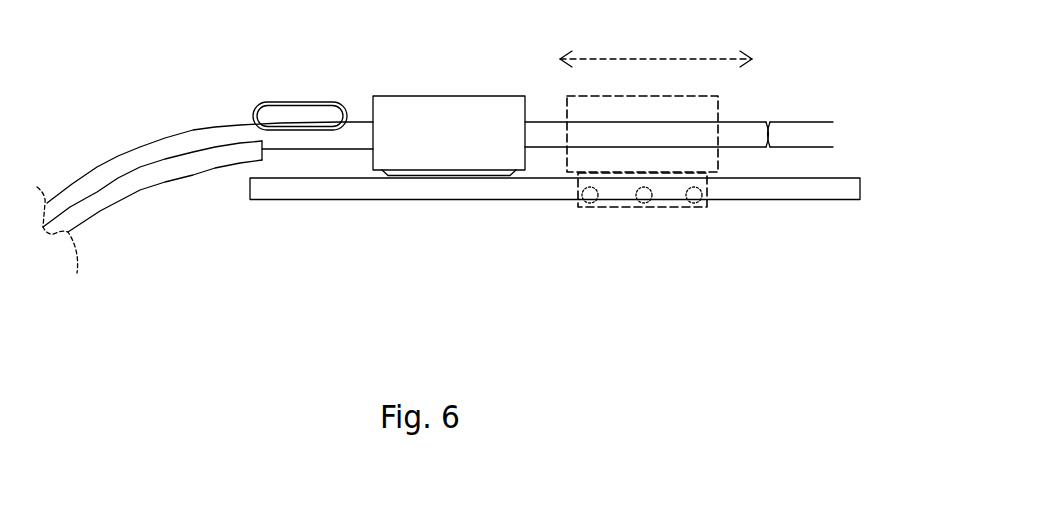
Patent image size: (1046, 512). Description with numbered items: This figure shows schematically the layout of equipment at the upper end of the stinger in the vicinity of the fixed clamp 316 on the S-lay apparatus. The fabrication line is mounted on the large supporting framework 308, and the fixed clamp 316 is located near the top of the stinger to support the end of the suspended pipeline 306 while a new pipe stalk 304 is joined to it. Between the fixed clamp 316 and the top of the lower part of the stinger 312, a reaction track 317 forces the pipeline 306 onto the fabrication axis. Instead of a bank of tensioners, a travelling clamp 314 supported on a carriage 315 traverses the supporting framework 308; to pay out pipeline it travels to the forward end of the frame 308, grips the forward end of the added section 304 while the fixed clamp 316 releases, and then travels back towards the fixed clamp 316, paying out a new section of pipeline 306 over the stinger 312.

The pipe stalk 304 is at (760, 73).
The suspended pipeline 306 is at (403, 175).
The supporting framework 308 is at (555, 213).
The lower part of stinger 312 is at (152, 206).
The travelling clamp 314 is at (632, 96).
The carriage 315 is at (642, 215).
The fixed clamp 316 is at (434, 98).
The reaction track 317 is at (264, 79).